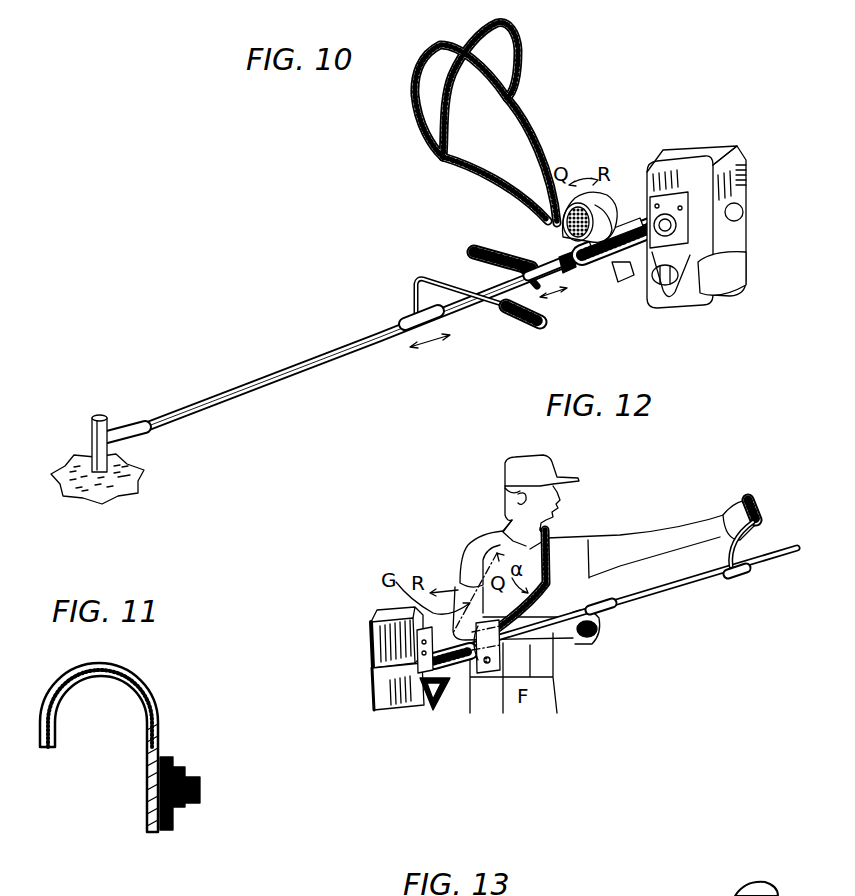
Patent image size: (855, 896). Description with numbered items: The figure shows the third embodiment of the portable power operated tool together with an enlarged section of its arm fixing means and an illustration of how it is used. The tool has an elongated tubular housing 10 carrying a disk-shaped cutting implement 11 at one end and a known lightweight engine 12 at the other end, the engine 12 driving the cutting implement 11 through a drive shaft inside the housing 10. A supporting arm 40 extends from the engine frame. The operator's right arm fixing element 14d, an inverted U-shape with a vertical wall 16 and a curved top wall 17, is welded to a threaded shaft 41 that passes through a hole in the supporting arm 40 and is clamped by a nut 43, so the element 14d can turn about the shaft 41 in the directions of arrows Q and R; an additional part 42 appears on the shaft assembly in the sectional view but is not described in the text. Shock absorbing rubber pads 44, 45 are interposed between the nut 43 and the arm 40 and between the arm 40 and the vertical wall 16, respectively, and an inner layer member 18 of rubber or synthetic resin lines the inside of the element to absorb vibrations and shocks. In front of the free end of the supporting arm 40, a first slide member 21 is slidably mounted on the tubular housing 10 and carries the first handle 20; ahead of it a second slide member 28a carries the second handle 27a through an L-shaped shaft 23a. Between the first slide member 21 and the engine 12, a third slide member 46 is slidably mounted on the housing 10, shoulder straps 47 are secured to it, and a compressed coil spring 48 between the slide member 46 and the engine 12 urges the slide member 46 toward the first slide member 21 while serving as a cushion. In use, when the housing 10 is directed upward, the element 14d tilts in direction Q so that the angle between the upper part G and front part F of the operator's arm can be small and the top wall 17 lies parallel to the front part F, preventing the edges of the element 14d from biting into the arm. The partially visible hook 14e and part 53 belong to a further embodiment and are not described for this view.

In FIG. 10, the tubular housing 10 is at (194, 397).
In FIG. 12, the tubular housing 10 is at (655, 603).
In FIG. 10, the cutting implement 11 is at (139, 496).
In FIG. 10, the engine 12 is at (703, 150).
In FIG. 12, the engine 12 is at (383, 700).
In FIG. 10, the operator's arm fixing element 14d is at (606, 205).
In FIG. 11, the operator's arm fixing element 14d is at (167, 689).
In FIG. 12, the operator's arm fixing element 14d is at (478, 690).
In FIG. 13, the hook 14e is at (630, 890).
In FIG. 11, the vertical wall 16 is at (156, 782).
In FIG. 12, the top wall 17 is at (486, 660).
In FIG. 11, the inner layer member 18 is at (60, 712).
In FIG. 10, the first handle 20 is at (500, 250).
In FIG. 12, the first handle 20 is at (586, 643).
In FIG. 10, the first slide member 21 is at (575, 280).
In FIG. 12, the first slide member 21 is at (612, 598).
In FIG. 10, the L-shaped shaft 23a is at (423, 278).
In FIG. 12, the L-shaped shaft 23a is at (742, 544).
In FIG. 10, the second handle 27a is at (530, 320).
In FIG. 12, the second handle 27a is at (760, 498).
In FIG. 10, the second slide member 28a is at (440, 322).
In FIG. 12, the second slide member 28a is at (744, 585).
In FIG. 10, the supporting arm 40 is at (660, 200).
In FIG. 11, the supporting arm 40 is at (172, 822).
In FIG. 12, the supporting arm 40 is at (455, 690).
In FIG. 11, the threaded shaft 41 is at (156, 797).
In FIG. 11, the nut 42 is at (180, 770).
In FIG. 11, the nut 43 is at (200, 796).
In FIG. 11, the shock absorbing rubber pad 44 is at (195, 812).
In FIG. 11, the shock absorbing rubber pad 45 is at (160, 812).
In FIG. 10, the third slide member 46 is at (580, 270).
In FIG. 10, the shoulder straps 47 is at (416, 130).
In FIG. 12, the shoulder straps 47 is at (520, 580).
In FIG. 10, the compressed coil spring 48 is at (618, 278).
In FIG. 13, the bracket 53 is at (681, 895).